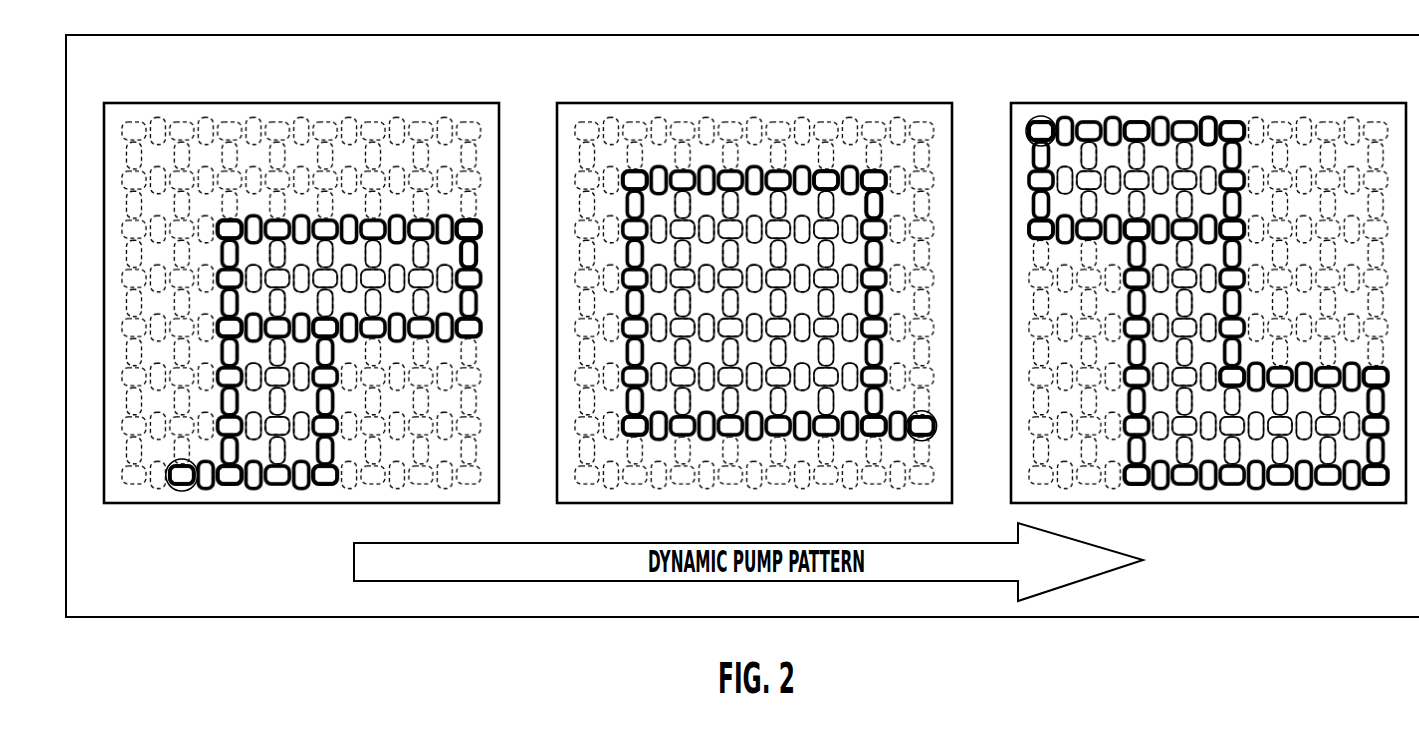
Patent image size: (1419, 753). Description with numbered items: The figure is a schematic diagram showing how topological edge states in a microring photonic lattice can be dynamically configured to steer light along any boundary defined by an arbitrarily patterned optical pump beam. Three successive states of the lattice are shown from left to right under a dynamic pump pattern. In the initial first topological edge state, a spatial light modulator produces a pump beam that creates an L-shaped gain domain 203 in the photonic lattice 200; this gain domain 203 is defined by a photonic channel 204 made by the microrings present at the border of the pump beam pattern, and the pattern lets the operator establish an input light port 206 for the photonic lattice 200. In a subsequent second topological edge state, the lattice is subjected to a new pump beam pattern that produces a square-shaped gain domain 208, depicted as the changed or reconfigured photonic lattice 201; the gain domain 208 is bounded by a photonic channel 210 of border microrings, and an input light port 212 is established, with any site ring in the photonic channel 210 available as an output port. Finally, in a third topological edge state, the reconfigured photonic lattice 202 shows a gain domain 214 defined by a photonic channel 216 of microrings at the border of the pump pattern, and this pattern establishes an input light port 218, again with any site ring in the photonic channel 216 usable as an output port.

The photonic lattice 200 is at (397, 103).
The photonic lattice 201 is at (650, 103).
The photonic lattice 202 is at (1325, 103).
The gain domain 203 is at (448, 253).
The photonic channel 204 is at (477, 258).
The input light port 206 is at (183, 491).
The gain domain 208 is at (853, 210).
The photonic channel 210 is at (845, 173).
The input light port 212 is at (936, 424).
The gain domain 214 is at (1205, 157).
The photonic channel 216 is at (1143, 122).
The input light port 218 is at (1038, 117).